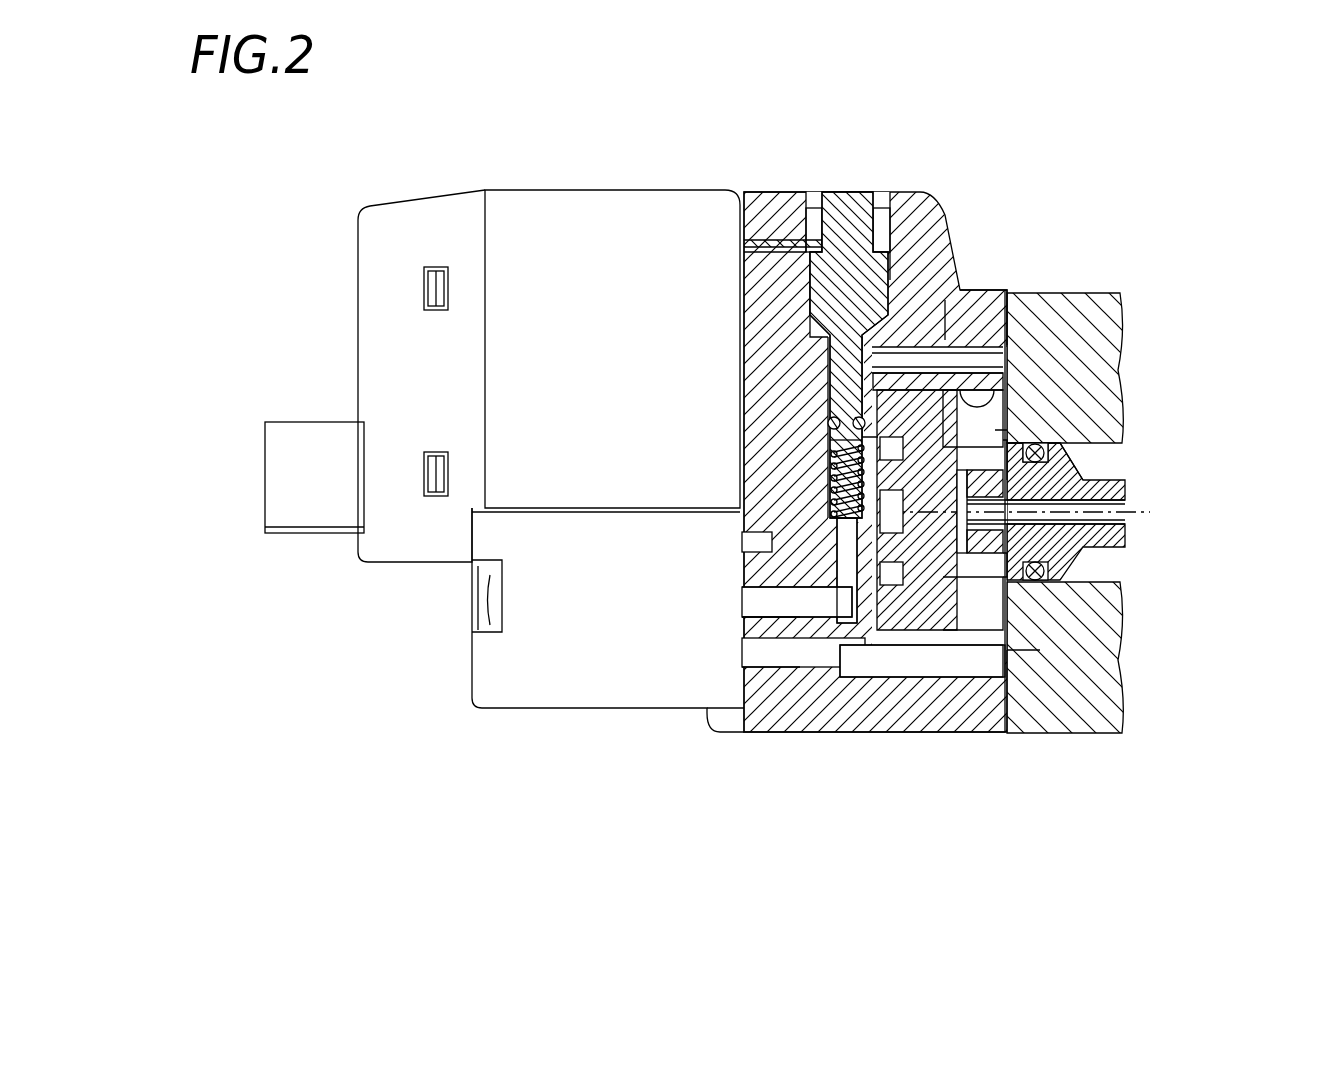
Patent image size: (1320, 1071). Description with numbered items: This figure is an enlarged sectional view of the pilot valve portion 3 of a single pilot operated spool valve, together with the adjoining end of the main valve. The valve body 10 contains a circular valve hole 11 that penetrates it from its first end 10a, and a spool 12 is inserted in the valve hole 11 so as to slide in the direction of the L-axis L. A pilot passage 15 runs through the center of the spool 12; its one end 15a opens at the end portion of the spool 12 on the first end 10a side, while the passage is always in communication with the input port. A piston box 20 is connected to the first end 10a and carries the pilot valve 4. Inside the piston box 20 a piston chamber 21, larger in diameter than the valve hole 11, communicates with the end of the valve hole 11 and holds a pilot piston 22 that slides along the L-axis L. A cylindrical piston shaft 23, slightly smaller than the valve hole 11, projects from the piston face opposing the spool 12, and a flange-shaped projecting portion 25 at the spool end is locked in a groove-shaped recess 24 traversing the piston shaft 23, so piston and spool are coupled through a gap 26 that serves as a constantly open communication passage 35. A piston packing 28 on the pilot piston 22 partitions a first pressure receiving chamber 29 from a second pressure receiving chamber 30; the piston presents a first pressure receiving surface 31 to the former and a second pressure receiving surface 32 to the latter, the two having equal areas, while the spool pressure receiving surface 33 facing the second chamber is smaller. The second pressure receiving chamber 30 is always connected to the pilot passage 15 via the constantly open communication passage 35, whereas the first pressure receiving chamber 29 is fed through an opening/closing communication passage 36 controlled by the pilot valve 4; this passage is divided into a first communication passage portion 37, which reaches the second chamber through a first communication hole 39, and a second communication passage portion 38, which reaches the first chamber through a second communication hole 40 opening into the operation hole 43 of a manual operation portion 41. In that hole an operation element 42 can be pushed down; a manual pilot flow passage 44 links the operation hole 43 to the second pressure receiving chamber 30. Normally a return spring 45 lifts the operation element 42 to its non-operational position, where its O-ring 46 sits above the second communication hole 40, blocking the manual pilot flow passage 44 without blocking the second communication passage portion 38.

The pilot valve portion 3 is at (634, 140).
The pilot valve 4 is at (547, 215).
The valve body 10 is at (1078, 333).
The first end 10a is at (1003, 290).
The valve hole 11 is at (1100, 452).
The spool 12 is at (1098, 493).
The pilot passage 15 is at (1090, 553).
The one end of the pilot passage 15a is at (1080, 475).
The piston box 20 is at (762, 205).
The piston chamber 21 is at (1007, 440).
The pilot piston 22 is at (925, 570).
The piston shaft 23 is at (1040, 380).
The groove-shaped recess 24 is at (1010, 588).
The flange-shaped projecting portion 25 is at (1013, 428).
The gap 26 is at (966, 556).
The piston packing 28 is at (945, 300).
The first pressure receiving chamber 29 is at (815, 600).
The second pressure receiving chamber 30 is at (1032, 707).
The first pressure receiving surface 31 is at (840, 620).
The second pressure receiving surface 32 is at (955, 560).
The spool pressure receiving surface 33 is at (833, 478).
The constantly open communication passage 35 is at (870, 608).
The opening/closing communication passage 36 is at (677, 784).
The first communication passage portion 37 is at (762, 648).
The second communication passage portion 38 is at (758, 598).
The first communication hole 39 is at (1003, 632).
The second communication hole 40 is at (830, 440).
The manual operation portion 41 is at (884, 170).
The operation element 42 is at (843, 225).
The operation hole 43 is at (815, 218).
The manual pilot flow passage 44 is at (963, 355).
The return spring 45 is at (745, 538).
The O-ring 46 is at (830, 423).
The L-axis L is at (1031, 519).